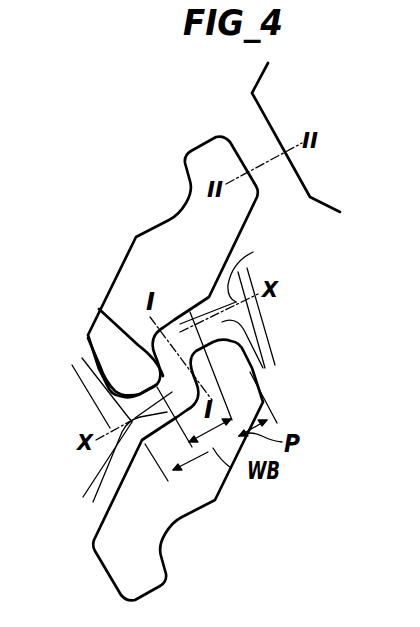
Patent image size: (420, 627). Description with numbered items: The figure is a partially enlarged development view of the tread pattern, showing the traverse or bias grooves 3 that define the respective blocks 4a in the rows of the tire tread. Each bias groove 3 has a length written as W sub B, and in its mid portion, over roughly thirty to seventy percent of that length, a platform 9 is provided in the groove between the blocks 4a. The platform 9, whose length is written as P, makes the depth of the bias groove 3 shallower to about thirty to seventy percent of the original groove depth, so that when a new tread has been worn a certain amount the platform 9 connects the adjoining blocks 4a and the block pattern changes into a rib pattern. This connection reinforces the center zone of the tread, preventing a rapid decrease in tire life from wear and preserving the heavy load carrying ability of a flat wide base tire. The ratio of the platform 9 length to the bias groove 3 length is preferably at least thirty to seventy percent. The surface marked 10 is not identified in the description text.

The bias groove 3 is at (96, 357).
The block 4a is at (208, 254).
The platform 9 is at (99, 312).
The curved surface of claw 10 is at (248, 299).